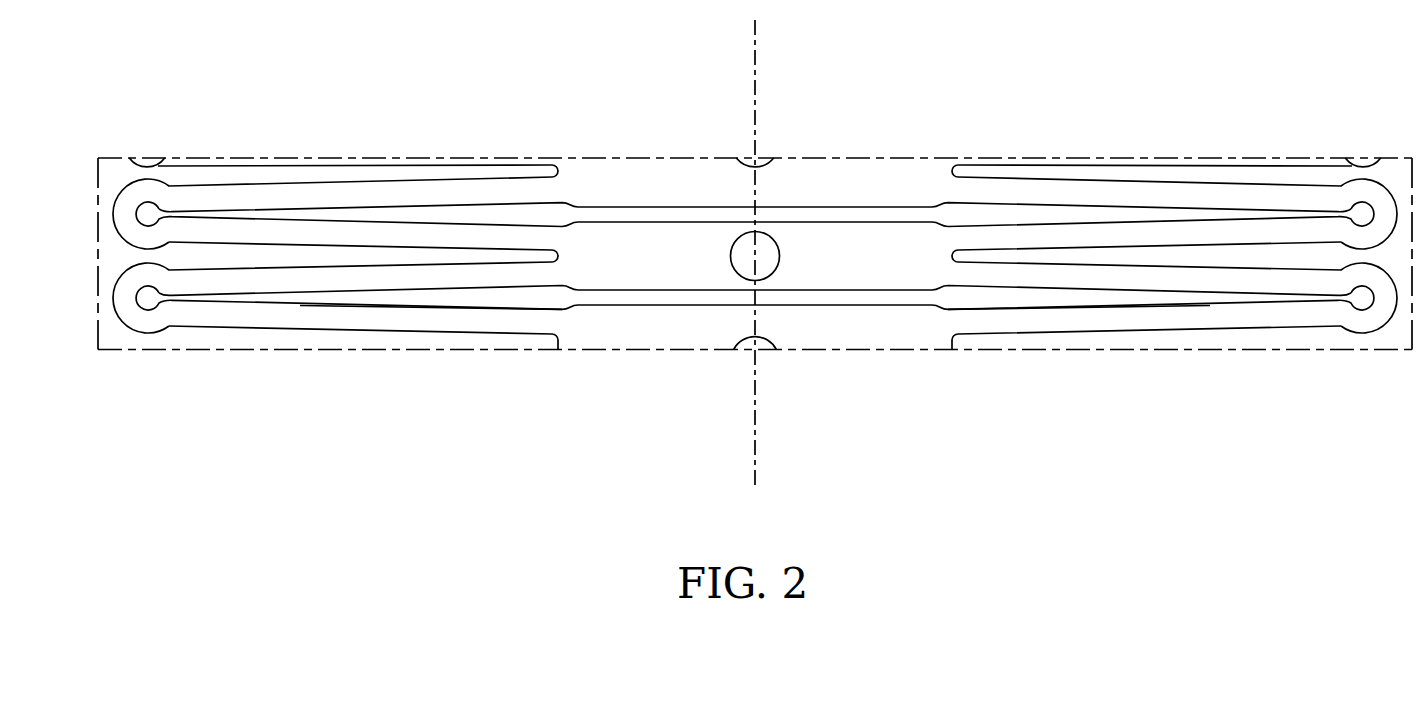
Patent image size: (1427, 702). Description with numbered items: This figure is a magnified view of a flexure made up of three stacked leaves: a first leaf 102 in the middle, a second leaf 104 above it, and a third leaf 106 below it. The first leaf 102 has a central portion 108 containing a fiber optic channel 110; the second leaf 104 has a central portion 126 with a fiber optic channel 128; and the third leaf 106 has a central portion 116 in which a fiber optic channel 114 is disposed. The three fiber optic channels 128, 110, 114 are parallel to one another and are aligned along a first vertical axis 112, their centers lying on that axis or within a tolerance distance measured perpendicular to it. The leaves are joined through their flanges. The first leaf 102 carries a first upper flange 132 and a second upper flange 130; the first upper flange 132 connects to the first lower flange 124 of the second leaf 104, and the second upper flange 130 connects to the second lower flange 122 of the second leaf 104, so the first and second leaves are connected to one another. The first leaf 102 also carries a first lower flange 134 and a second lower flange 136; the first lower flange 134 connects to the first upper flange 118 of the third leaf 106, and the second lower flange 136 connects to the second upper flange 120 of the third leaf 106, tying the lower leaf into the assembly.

The first leaf 102 is at (97, 215).
The second leaf 104 is at (97, 158).
The third leaf 106 is at (97, 300).
The central portion 108 is at (846, 314).
The fiber optic channel 110 is at (763, 258).
The first vertical axis 112 is at (757, 405).
The fiber optic channel 114 is at (752, 335).
The central portion 116 is at (573, 330).
The first upper flange 118 is at (440, 318).
The second upper flange 120 is at (1185, 318).
The second lower flange 122 is at (1098, 190).
The first lower flange 124 is at (407, 192).
The central portion 126 is at (600, 183).
The fiber optic channel 128 is at (763, 177).
The second upper flange 130 is at (1247, 232).
The first upper flange 132 is at (218, 230).
The first lower flange 134 is at (252, 280).
The second lower flange 136 is at (1290, 285).